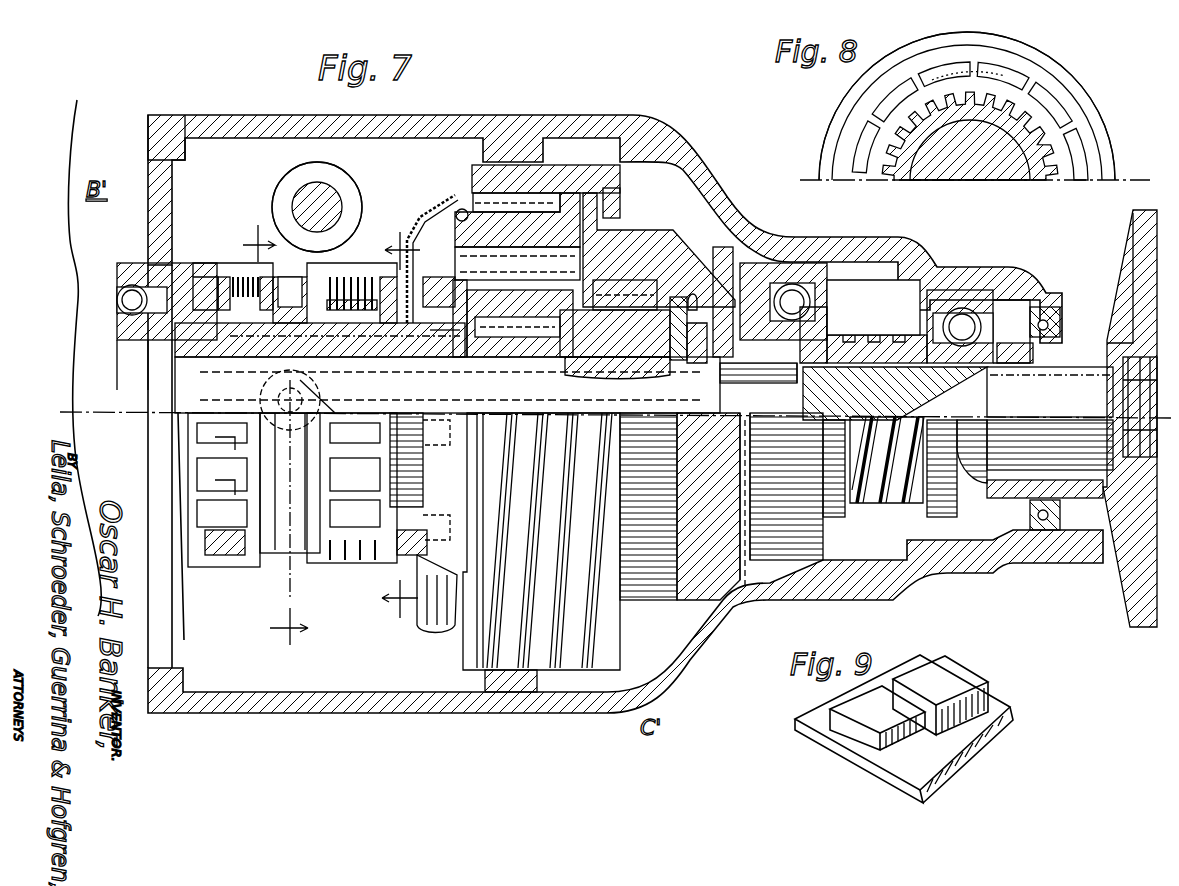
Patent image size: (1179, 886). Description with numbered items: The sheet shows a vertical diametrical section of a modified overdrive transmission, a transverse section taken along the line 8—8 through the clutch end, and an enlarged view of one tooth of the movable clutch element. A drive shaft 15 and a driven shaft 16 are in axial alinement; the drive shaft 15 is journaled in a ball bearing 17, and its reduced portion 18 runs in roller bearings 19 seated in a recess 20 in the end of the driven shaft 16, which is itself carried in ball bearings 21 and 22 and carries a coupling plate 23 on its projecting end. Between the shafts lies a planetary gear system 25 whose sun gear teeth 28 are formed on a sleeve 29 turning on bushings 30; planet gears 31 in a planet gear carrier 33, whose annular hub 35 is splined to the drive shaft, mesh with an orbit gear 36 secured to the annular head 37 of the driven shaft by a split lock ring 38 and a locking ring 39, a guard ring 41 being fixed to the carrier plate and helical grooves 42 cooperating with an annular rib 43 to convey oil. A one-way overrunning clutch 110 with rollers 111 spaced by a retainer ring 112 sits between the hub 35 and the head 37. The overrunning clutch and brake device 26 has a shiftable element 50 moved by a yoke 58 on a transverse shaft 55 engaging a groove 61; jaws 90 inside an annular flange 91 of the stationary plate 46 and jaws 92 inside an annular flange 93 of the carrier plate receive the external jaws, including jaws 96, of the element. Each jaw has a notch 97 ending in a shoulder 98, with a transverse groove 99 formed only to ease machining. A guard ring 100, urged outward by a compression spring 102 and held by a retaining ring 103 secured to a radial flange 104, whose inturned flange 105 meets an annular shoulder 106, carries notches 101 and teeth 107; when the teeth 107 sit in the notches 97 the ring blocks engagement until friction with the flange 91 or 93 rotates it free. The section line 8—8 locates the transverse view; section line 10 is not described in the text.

In FIG. 7, the section line 8— 8 is at (401, 419).
In FIG. 7, the section line 10- 10 is at (275, 433).
In FIG. 7, the drive shaft 15 is at (458, 370).
In FIG. 8, the drive shaft 15 is at (962, 170).
In FIG. 7, the driven shaft 16 is at (958, 425).
In FIG. 7, the ball bearing 17 is at (117, 297).
In FIG. 7, the reduced portion 18 is at (756, 383).
In FIG. 7, the roller bearings 19 is at (765, 370).
In FIG. 7, the recess 20 is at (843, 335).
In FIG. 7, the ball bearing 21 is at (793, 284).
In FIG. 7, the ball bearing 22 is at (963, 308).
In FIG. 7, the coupling plate 23 is at (1130, 598).
In FIG. 7, the planetary gear system 25 is at (467, 178).
In FIG. 7, the overrunning clutch and brake device 26 is at (322, 582).
In FIG. 7, the sun gear teeth 28 is at (480, 357).
In FIG. 7, the sleeve 29 is at (355, 357).
In FIG. 8, the sleeve 29 is at (1032, 172).
In FIG. 7, the bushings 30 is at (450, 340).
In FIG. 7, the planet gears 31 is at (456, 210).
In FIG. 7, the planet gear carrier 33 is at (517, 263).
In FIG. 7, the annular hub 35 is at (605, 357).
In FIG. 7, the orbit gear 36 is at (478, 165).
In FIG. 7, the annular head 37 is at (640, 235).
In FIG. 7, the split lock ring 38 is at (612, 200).
In FIG. 7, the locking ring 39 is at (672, 365).
In FIG. 7, the guard ring 41 is at (430, 600).
In FIG. 7, the helical grooves 42 is at (520, 615).
In FIG. 7, the annular rib 43 is at (538, 681).
In FIG. 7, the stationary plate 46 is at (150, 162).
In FIG. 7, the shiftable element 50 is at (292, 300).
In FIG. 7, the shaft 55 is at (317, 183).
In FIG. 7, the yoke 58 is at (275, 185).
In FIG. 7, the groove 61 is at (305, 553).
In FIG. 7, the jaws 90 is at (180, 345).
In FIG. 7, the annular flange 91 is at (205, 277).
In FIG. 7, the jaws 92 is at (438, 296).
In FIG. 7, the annular flange 93 is at (455, 345).
In FIG. 7, the jaws 96 is at (395, 487).
In FIG. 7, the notch 97 is at (235, 480).
In FIG. 9, the notch 97 is at (880, 738).
In FIG. 9, the shoulder 98 is at (960, 692).
In FIG. 9, the transverse groove 99 is at (886, 690).
In FIG. 7, the guard ring 100 is at (418, 260).
In FIG. 8, the guard ring 100 is at (1108, 140).
In FIG. 8, the notches 101 is at (860, 145).
In FIG. 7, the compression spring 102 is at (245, 277).
In FIG. 7, the retaining ring 103 is at (372, 565).
In FIG. 7, the radial flange 104 is at (325, 550).
In FIG. 7, the inturned flange 105 is at (400, 553).
In FIG. 7, the annular shoulder 106 is at (368, 277).
In FIG. 8, the teeth 107 is at (928, 76).
In FIG. 7, the one-way overrunning clutch 110 is at (678, 290).
In FIG. 7, the rollers 111 is at (640, 282).
In FIG. 7, the retainer ring 112 is at (700, 300).